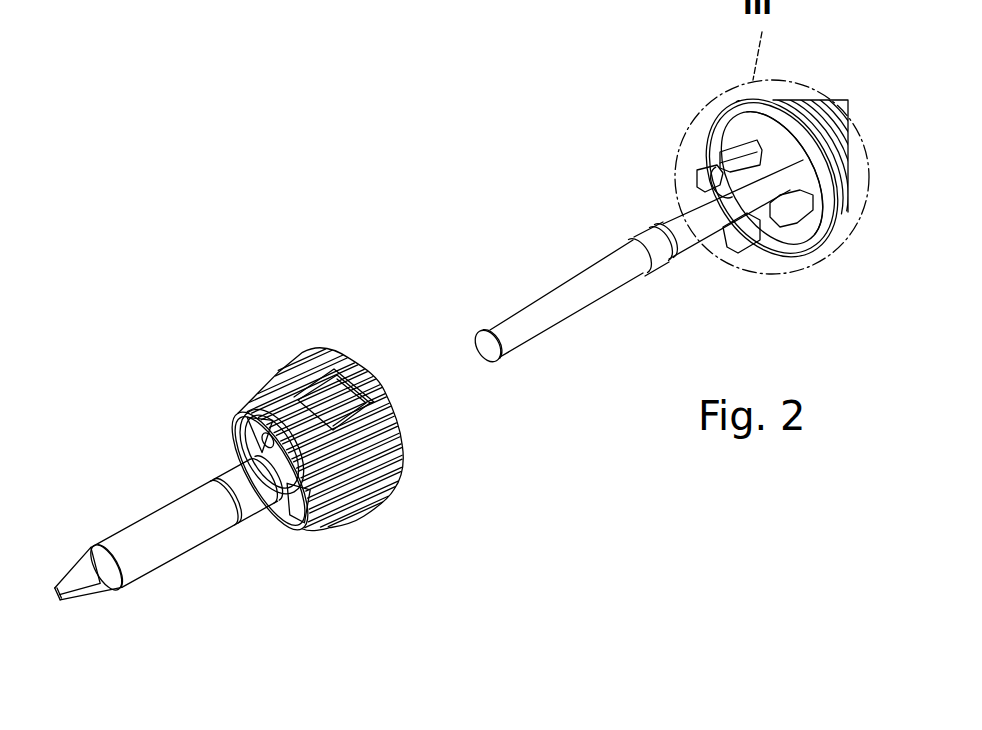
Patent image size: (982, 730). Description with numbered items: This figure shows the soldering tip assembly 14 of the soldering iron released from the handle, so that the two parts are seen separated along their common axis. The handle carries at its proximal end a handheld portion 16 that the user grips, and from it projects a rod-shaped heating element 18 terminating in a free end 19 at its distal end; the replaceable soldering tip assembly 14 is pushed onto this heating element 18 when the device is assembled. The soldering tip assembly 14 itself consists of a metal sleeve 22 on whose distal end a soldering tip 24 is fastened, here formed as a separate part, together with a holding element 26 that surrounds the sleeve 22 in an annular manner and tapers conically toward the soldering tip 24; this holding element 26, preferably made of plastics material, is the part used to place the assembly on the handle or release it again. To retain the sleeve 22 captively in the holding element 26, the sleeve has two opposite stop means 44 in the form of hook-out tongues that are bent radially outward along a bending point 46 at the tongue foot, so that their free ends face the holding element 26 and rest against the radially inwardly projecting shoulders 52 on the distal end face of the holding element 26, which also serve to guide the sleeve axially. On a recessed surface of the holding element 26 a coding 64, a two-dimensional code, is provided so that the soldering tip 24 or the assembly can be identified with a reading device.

The soldering tip assembly 14 is at (239, 341).
The handheld portion 16 is at (820, 127).
The rod-shaped heating element 18 is at (583, 283).
The free end 19 is at (482, 343).
The sleeve 22 is at (253, 503).
The soldering tip 24 is at (130, 538).
The holding element 26 is at (368, 500).
The stop means 44 is at (270, 443).
The bending point 46 is at (268, 440).
The shoulders 52 is at (277, 423).
The coding 64 is at (330, 390).